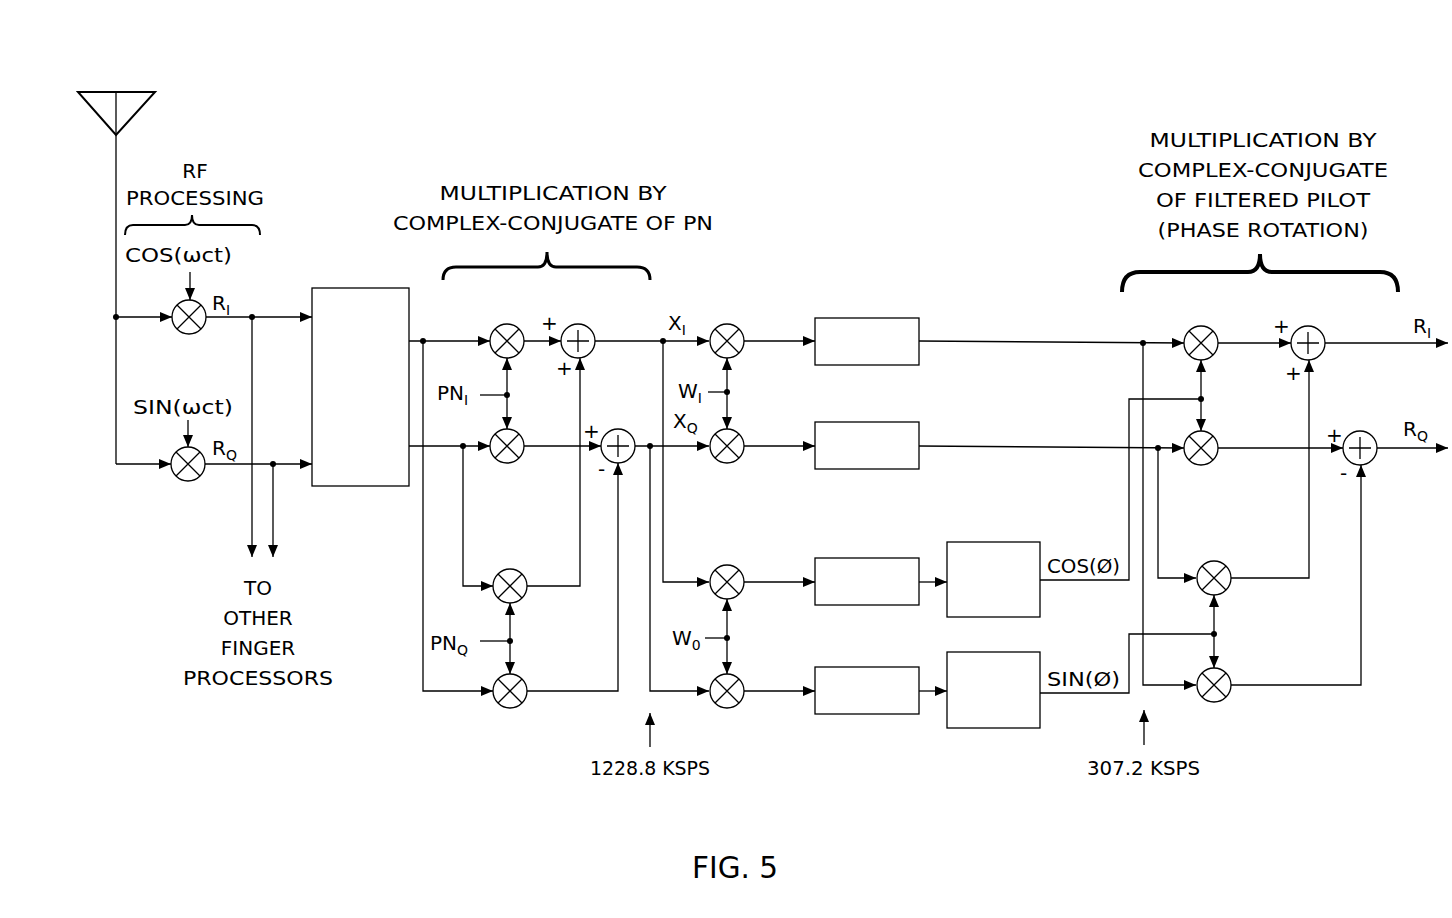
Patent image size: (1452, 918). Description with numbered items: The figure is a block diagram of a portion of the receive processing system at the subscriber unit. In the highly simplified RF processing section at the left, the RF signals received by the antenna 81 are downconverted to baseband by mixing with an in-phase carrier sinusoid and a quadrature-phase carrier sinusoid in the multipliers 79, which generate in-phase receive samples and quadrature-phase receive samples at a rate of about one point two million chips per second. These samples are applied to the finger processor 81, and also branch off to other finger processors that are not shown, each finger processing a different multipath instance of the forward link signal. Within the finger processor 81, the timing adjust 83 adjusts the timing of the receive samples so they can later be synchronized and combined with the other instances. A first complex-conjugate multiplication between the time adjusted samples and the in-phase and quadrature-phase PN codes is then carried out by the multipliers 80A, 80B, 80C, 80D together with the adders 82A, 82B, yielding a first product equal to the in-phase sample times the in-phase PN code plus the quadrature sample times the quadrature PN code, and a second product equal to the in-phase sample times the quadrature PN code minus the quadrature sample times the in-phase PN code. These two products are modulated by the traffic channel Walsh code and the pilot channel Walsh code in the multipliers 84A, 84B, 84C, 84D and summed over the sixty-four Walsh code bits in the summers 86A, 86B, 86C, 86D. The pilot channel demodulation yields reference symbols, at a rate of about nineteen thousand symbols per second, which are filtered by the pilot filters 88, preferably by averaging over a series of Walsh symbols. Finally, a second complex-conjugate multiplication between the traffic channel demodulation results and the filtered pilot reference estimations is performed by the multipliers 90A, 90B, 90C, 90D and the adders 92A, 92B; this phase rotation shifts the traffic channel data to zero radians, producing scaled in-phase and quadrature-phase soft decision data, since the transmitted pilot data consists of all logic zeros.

The multipliers 79 is at (198, 334).
The antenna 81 is at (127, 92).
The timing adjust 83 is at (327, 487).
The multiplier 80A is at (514, 328).
The multiplier 80B is at (515, 433).
The multiplier 80C is at (515, 572).
The multiplier 80D is at (517, 677).
The adder 82A is at (585, 328).
The adder 82B is at (628, 432).
The multiplier 84A is at (735, 357).
The multiplier 84B is at (733, 462).
The multiplier 84C is at (735, 567).
The multiplier 84D is at (735, 675).
The summer 86A is at (857, 365).
The summer 86B is at (857, 469).
The summer 86C is at (850, 605).
The summer 86D is at (850, 714).
The pilot filters 88 is at (975, 617).
The multiplier 90A is at (1208, 328).
The multiplier 90B is at (1210, 433).
The multiplier 90C is at (1220, 562).
The multiplier 90D is at (1220, 670).
The adder 92A is at (1315, 328).
The adder 92B is at (1370, 463).